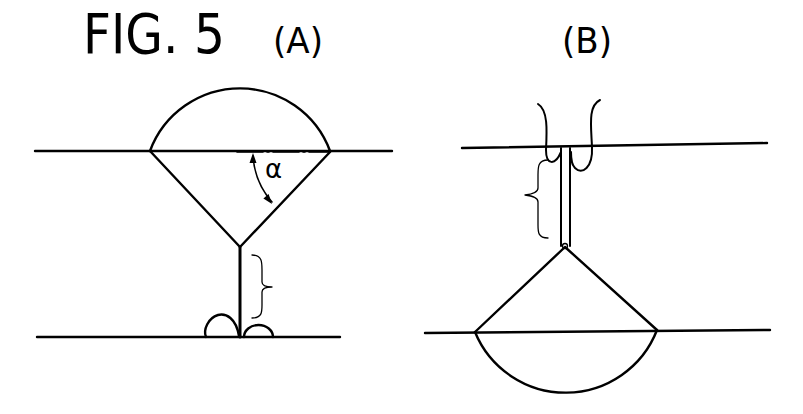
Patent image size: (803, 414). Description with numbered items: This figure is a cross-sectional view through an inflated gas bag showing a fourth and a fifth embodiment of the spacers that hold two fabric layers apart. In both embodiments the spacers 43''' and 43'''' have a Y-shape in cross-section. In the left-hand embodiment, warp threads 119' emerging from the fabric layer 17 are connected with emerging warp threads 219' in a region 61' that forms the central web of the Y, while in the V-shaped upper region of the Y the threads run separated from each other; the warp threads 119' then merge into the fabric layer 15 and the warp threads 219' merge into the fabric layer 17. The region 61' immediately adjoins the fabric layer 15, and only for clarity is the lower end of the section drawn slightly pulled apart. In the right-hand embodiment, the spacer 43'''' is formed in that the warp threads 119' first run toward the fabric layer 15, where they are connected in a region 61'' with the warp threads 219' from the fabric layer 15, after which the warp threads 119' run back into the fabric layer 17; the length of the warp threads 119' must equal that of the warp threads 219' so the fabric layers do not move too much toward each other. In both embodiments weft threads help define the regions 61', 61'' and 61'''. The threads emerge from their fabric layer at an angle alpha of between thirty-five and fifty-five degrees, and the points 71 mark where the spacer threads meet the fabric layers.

The fabric layer 17 is at (62, 150).
The fabric layer 15 is at (80, 338).
The weld toe / bead edge 71 is at (148, 145).
The warp threads 119' is at (368, 231).
The warp threads 219' is at (439, 268).
The spacer 43''' is at (182, 289).
The region 61' is at (283, 286).
The region 61''' is at (522, 197).
The region 61'' is at (605, 220).
The spacer 43'''' is at (597, 238).